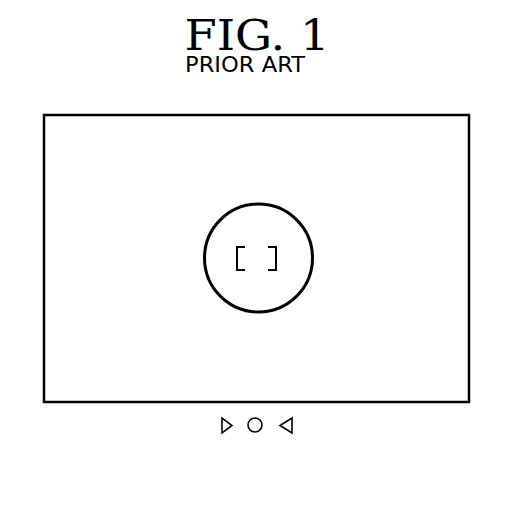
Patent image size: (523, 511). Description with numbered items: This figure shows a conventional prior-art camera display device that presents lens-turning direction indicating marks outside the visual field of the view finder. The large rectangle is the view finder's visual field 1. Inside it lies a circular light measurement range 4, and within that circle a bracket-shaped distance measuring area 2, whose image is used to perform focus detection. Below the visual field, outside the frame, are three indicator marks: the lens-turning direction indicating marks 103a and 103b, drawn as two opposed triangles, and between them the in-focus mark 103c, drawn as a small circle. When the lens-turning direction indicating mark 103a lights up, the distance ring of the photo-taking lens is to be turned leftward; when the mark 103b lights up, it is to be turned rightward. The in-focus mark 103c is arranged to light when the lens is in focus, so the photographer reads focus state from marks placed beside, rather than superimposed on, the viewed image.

The view finder's visual field 1 is at (323, 116).
The distance measuring area 2 is at (236, 258).
The light measurement range 4 is at (283, 208).
The lens-turning direction indicating mark 103a is at (295, 423).
The lens-turning direction indicating mark 103b is at (220, 423).
The in-focus mark 103c is at (252, 433).